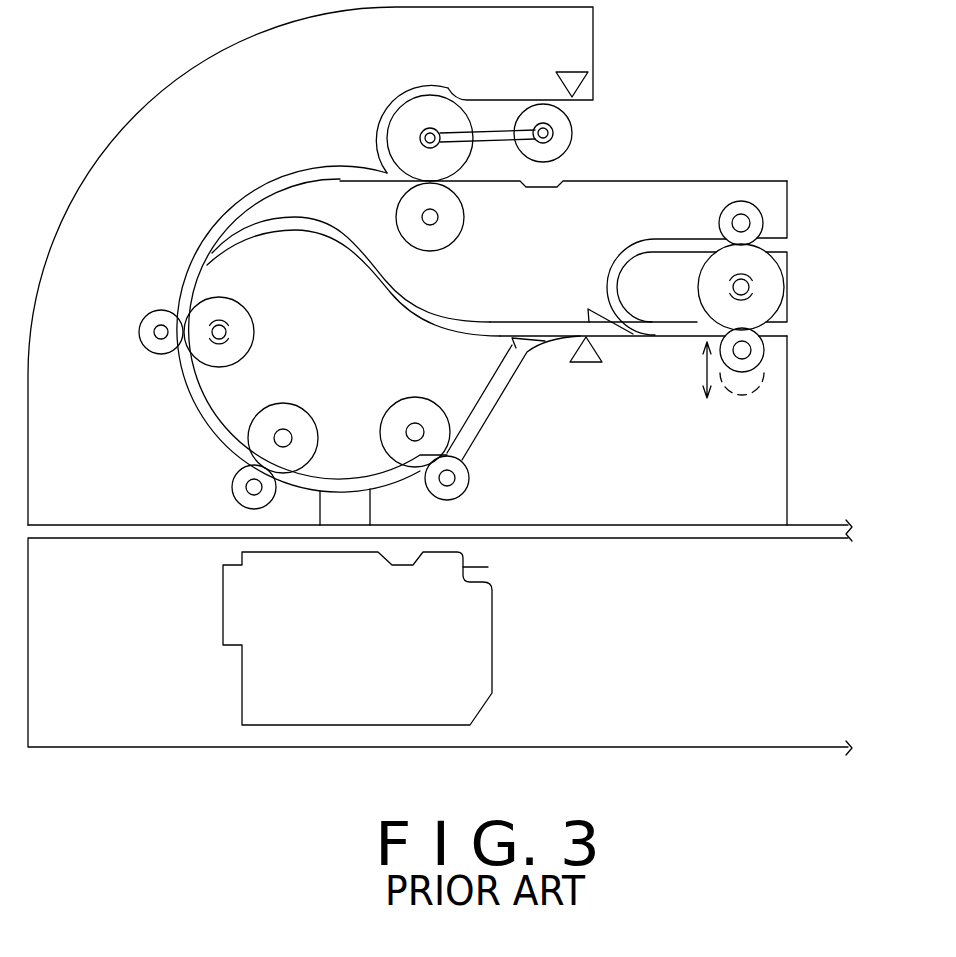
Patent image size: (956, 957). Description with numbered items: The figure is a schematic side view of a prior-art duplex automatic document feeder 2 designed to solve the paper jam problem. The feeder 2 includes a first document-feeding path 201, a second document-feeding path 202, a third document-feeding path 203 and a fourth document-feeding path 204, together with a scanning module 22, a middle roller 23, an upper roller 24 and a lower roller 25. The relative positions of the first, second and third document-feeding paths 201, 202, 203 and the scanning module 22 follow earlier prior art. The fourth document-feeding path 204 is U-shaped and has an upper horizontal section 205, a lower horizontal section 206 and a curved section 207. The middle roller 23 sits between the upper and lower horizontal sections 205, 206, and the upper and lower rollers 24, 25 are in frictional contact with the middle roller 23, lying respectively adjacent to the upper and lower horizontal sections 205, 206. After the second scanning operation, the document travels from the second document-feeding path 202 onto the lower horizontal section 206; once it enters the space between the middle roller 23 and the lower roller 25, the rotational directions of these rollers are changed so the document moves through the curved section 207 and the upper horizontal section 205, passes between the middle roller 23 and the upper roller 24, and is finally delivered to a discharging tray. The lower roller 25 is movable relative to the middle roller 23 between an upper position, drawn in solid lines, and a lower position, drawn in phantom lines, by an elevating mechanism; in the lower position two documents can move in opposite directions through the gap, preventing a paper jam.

The duplex automatic document feeder 2 is at (657, 136).
The first document-feeding path 201 is at (200, 402).
The second document-feeding path 202 is at (486, 414).
The third document-feeding path 203 is at (418, 298).
The fourth document-feeding path 204 is at (660, 208).
The upper horizontal section 205 is at (659, 246).
The lower horizontal section 206 is at (578, 326).
The curved section 207 is at (606, 288).
The scanning module 22 is at (362, 508).
The middle roller 23 is at (773, 287).
The upper roller 24 is at (757, 218).
The lower roller 25 is at (764, 351).